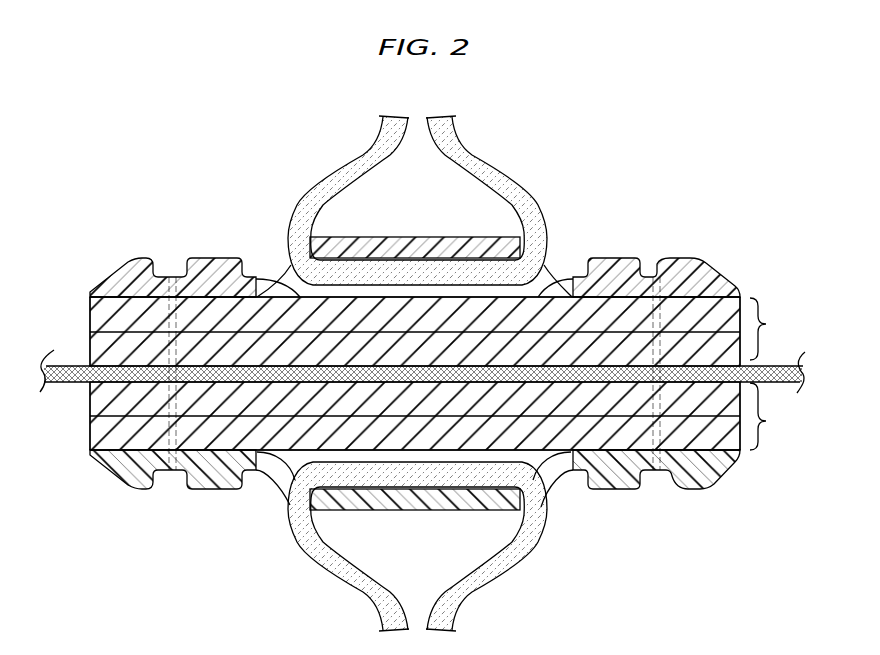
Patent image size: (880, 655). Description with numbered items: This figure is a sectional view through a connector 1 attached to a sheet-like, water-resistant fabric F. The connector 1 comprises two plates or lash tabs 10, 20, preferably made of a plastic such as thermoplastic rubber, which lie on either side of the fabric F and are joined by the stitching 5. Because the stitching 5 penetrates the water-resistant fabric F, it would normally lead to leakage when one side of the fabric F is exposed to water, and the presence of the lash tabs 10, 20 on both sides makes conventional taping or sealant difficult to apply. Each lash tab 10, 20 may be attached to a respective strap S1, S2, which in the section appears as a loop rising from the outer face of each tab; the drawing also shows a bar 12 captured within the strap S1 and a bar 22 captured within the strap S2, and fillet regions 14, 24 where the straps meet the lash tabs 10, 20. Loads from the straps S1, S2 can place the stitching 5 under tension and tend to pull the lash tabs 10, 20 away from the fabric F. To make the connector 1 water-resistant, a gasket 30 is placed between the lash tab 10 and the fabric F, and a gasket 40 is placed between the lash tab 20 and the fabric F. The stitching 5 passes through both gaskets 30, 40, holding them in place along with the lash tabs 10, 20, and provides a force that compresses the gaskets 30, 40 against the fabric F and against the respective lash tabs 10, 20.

The connector 1 is at (78, 500).
The stitching 5 is at (657, 275).
The lash tab 10 is at (702, 263).
The upper bar 12 is at (358, 237).
The upper fillet region 14 is at (280, 275).
The lash tab 20 is at (712, 480).
The lower bar 22 is at (363, 512).
The lower fillet region 24 is at (282, 475).
The gasket 30 is at (766, 324).
The gasket 40 is at (767, 421).
The fabric F is at (65, 368).
The strap S1 is at (475, 165).
The strap S2 is at (480, 580).